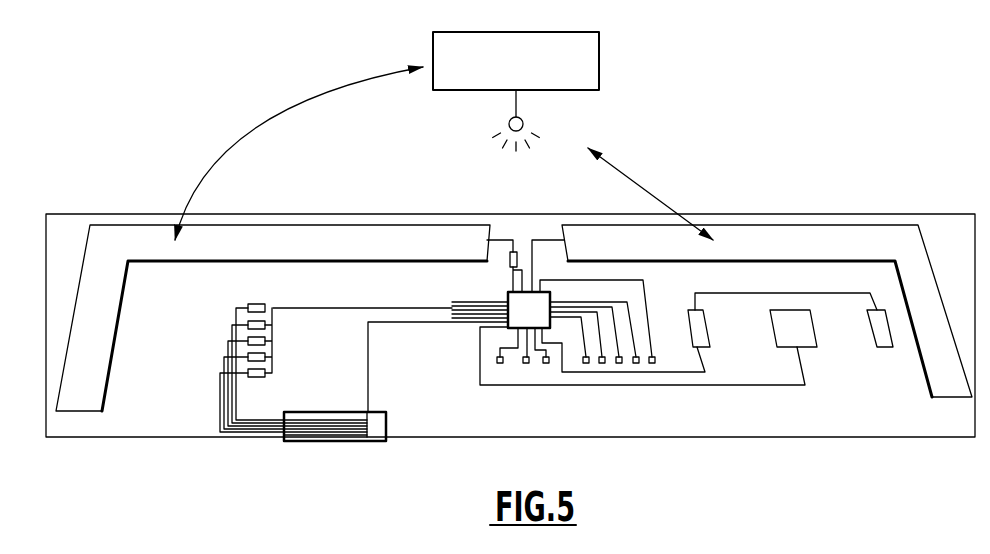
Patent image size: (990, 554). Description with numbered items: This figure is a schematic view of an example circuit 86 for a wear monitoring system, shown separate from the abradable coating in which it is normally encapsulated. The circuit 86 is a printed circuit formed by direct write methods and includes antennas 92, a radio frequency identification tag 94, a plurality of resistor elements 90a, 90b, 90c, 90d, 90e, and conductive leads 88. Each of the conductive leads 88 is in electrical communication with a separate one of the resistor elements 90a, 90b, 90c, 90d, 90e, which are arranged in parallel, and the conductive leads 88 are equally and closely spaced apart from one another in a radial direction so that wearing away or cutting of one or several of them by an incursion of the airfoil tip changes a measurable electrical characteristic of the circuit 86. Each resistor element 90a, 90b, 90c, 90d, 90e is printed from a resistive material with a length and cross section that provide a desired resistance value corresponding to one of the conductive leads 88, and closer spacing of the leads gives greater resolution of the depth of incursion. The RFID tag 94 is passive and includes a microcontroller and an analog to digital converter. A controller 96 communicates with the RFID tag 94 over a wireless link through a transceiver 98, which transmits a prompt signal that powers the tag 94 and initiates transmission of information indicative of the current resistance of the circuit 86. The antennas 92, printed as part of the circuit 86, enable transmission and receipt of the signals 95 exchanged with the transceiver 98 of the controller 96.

The circuit 86 is at (735, 183).
The conductive leads 88 is at (332, 443).
The resistor element 90a is at (257, 304).
The resistor element 90b is at (248, 325).
The resistor element 90c is at (248, 341).
The resistor element 90d is at (248, 357).
The resistor element 90e is at (257, 378).
The antennas 92 is at (325, 242).
The RFID tag 94 is at (583, 295).
The signals 95 is at (253, 130).
The controller 96 is at (599, 52).
The transceiver 98 is at (523, 118).